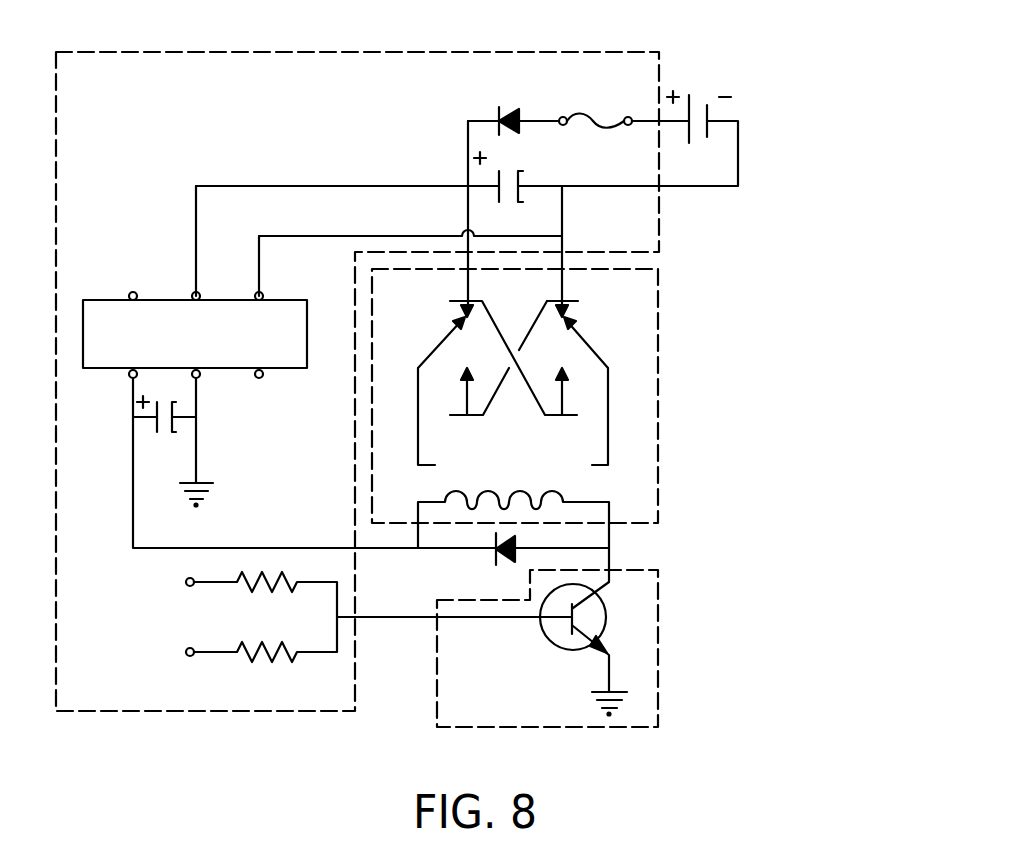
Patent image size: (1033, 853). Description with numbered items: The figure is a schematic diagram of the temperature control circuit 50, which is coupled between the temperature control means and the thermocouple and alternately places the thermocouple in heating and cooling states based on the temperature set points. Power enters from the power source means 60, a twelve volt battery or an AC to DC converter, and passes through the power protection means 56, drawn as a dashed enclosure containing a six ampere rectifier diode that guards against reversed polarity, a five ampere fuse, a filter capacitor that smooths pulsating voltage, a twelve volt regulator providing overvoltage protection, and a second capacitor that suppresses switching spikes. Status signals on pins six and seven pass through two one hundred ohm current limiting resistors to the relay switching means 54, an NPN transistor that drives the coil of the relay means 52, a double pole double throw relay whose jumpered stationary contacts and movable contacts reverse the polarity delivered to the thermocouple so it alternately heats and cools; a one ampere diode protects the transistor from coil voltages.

The temperature control circuit 50 is at (760, 52).
The relay means 52 is at (649, 337).
The relay switching means 54 is at (644, 660).
The power protection means 56 is at (537, 62).
The power source means 60 is at (698, 95).